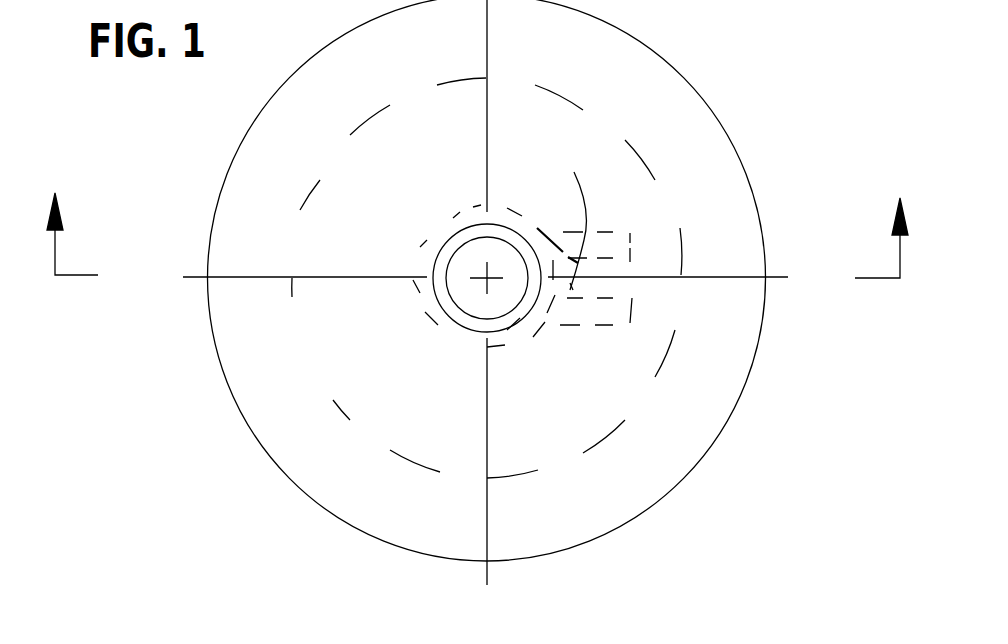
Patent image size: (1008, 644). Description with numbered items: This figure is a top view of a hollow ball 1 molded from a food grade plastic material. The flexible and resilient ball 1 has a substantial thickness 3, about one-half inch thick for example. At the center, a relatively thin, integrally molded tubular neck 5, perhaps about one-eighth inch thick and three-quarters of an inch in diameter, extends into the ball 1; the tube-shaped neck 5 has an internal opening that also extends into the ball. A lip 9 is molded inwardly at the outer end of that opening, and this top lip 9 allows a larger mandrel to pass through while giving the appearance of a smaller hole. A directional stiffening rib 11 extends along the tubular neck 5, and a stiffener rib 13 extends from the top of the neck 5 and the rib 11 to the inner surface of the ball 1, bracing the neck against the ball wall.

The ball 1 is at (217, 164).
The thickness 3 is at (248, 352).
The tubular neck 5 is at (460, 346).
The lip 9 is at (450, 242).
The directional stiffening rib 11 is at (576, 213).
The stiffener rib 13 is at (602, 325).